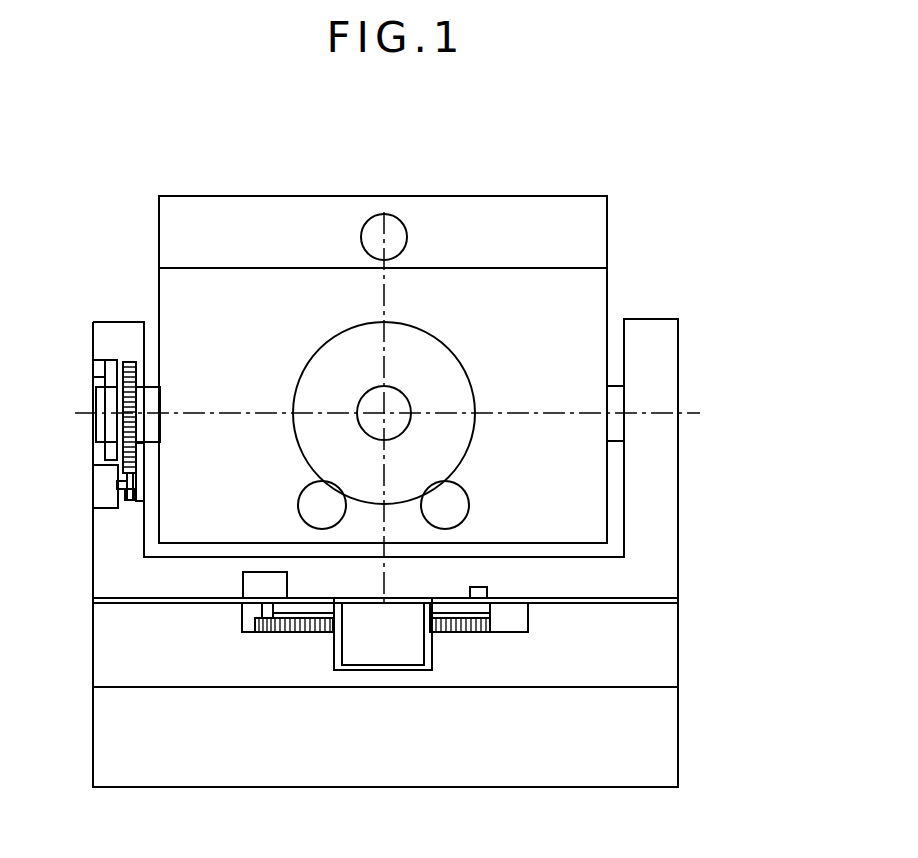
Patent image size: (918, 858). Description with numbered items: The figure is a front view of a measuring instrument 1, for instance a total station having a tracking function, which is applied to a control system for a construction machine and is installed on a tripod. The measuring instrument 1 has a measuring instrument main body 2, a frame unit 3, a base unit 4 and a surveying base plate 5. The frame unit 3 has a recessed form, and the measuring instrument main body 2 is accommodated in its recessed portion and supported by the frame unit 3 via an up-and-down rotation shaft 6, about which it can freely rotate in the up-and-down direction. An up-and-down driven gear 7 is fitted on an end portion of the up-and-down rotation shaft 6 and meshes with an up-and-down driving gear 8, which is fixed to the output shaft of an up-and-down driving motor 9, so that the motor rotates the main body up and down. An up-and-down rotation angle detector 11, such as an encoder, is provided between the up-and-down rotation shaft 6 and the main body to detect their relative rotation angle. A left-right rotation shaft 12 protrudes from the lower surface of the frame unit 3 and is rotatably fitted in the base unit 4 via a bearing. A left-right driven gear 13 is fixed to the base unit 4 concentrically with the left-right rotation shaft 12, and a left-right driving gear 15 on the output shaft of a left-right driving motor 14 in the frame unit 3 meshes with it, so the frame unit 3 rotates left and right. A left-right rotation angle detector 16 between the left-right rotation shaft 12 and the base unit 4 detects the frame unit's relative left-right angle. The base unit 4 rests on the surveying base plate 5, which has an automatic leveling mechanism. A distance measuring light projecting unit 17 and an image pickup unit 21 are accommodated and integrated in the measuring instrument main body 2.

The measuring instrument 1 is at (316, 160).
The measuring instrument main body 2 is at (500, 196).
The frame unit 3 is at (655, 319).
The base unit 4 is at (678, 657).
The surveying base plate 5 is at (678, 750).
The up-and-down rotation shaft 6 is at (614, 386).
The up-and-down driven gear 7 is at (130, 361).
The up-and-down driving gear 8 is at (132, 501).
The up-and-down driving motor 9 is at (93, 512).
The up-and-down rotation angle detector 11 is at (108, 340).
The left-right rotation shaft 12 is at (430, 649).
The left-right driven gear 13 is at (490, 626).
The left-right driving motor 14 is at (243, 575).
The left-right driving gear 15 is at (255, 623).
The left-right rotation angle detector 16 is at (510, 594).
The distance measuring light projecting unit 17 is at (460, 338).
The image pickup unit 21 is at (349, 240).